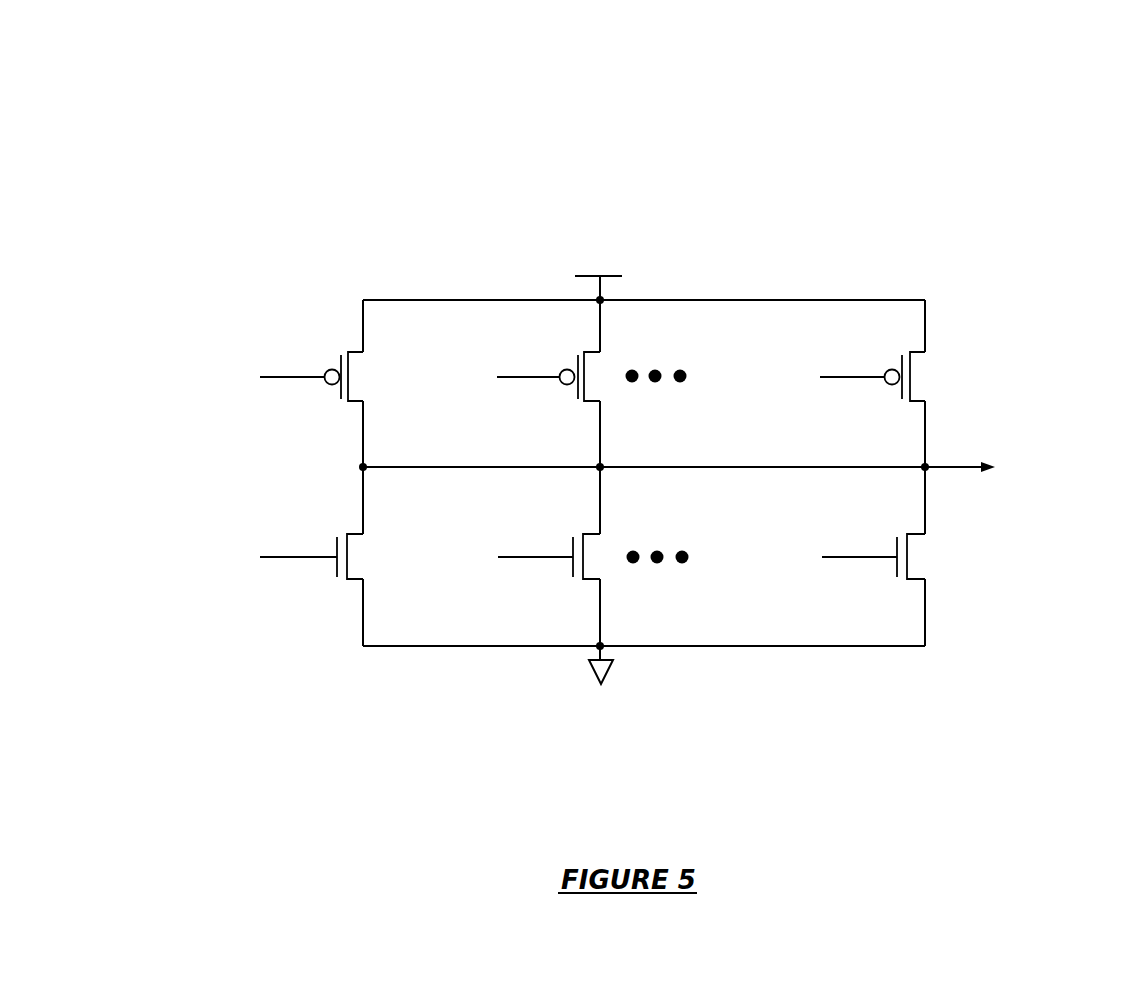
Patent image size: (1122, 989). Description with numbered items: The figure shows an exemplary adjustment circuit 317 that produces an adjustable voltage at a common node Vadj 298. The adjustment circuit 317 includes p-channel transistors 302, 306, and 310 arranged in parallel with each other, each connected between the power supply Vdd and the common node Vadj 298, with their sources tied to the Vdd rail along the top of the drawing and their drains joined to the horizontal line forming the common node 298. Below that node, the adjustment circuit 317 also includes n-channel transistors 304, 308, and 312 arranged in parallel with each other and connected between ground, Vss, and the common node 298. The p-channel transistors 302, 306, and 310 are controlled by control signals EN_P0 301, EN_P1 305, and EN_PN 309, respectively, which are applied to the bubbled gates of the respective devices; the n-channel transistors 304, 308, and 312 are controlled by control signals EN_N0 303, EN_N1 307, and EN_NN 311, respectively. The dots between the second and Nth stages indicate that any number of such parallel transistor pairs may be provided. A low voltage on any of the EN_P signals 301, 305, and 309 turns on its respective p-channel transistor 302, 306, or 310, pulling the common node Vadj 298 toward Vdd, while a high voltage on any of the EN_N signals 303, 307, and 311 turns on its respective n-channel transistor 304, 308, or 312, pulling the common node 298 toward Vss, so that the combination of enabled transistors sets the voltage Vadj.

The adjustment circuit 317 is at (1000, 101).
The common node Vadj 298 is at (958, 464).
The control signal EN_P0 301 is at (297, 377).
The p-channel transistor 302 is at (338, 393).
The control signal EN_N0 303 is at (295, 557).
The n-channel transistor 304 is at (336, 573).
The control signal EN_P1 305 is at (533, 376).
The p-channel transistor 306 is at (577, 393).
The control signal EN_N1 307 is at (530, 555).
The n-channel transistor 308 is at (572, 572).
The control signal EN_PN 309 is at (854, 376).
The p-channel transistor 310 is at (901, 392).
The control signal EN_NN 311 is at (855, 555).
The n-channel transistor 312 is at (896, 570).